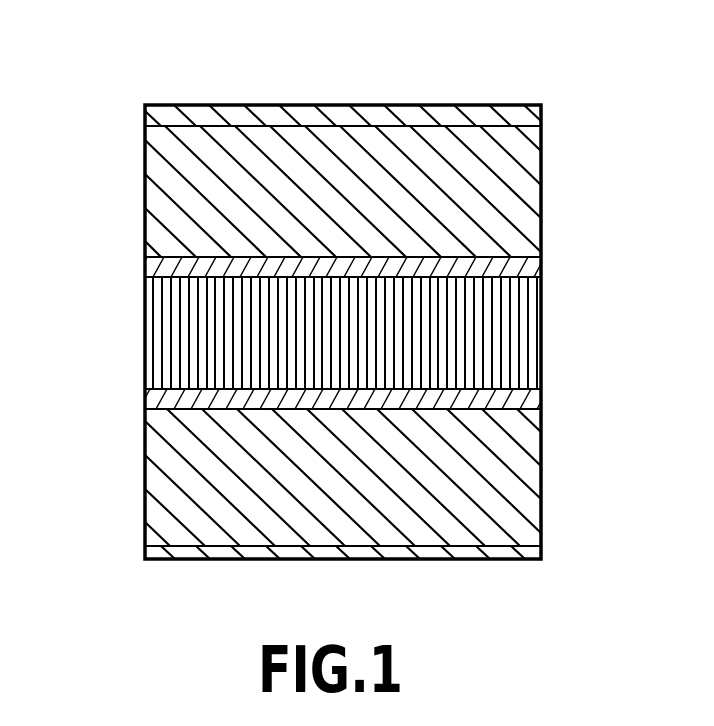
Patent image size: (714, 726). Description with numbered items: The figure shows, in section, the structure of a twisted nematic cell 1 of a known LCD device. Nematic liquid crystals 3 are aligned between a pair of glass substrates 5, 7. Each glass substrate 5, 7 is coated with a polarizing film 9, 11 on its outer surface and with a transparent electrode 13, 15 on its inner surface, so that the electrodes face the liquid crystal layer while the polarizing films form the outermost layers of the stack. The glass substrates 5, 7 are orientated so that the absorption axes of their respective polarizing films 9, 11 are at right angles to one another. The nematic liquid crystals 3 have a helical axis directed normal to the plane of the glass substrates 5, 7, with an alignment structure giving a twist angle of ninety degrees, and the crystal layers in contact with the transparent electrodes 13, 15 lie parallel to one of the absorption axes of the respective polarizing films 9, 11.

The TN cell 1 is at (140, 71).
The polarizing film 9 is at (530, 115).
The glass substrate 5 is at (528, 184).
The transparent electrode 13 is at (530, 264).
The nematic liquid crystals 3 is at (528, 333).
The transparent electrode 15 is at (528, 399).
The glass substrate 7 is at (528, 473).
The polarizing film 11 is at (528, 551).